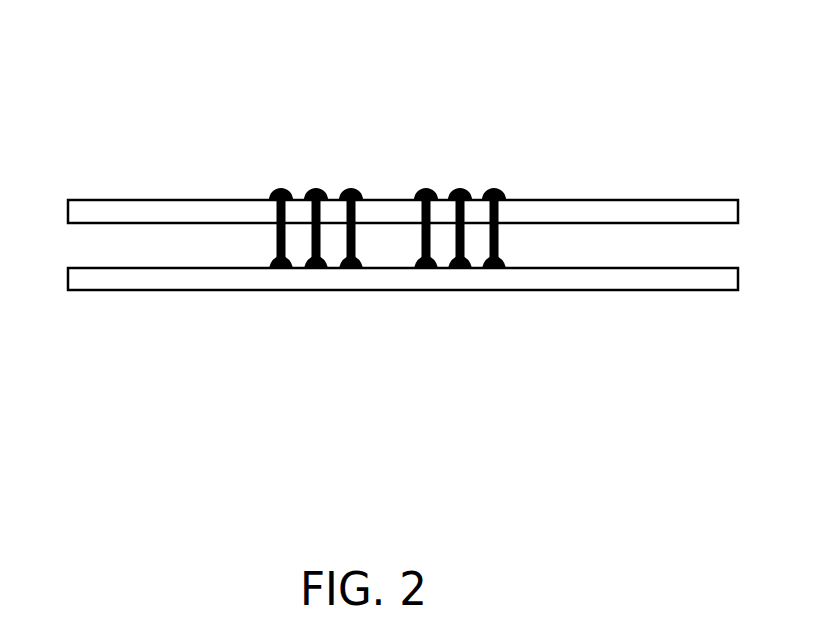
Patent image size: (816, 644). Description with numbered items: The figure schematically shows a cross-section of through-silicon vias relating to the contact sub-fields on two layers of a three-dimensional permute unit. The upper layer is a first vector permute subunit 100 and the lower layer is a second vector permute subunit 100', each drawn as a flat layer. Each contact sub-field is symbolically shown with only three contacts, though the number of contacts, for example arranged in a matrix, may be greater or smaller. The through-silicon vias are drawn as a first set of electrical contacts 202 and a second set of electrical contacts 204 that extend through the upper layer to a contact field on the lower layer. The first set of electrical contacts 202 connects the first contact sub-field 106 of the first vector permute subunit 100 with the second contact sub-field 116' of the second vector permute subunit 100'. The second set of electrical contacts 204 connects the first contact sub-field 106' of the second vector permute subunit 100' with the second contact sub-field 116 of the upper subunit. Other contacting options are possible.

The first vector permute subunit 100 is at (403, 146).
The second vector permute subunit 100' is at (380, 345).
The first set of electrical contacts 202 is at (273, 246).
The second set of electrical contacts 204 is at (510, 243).
The first contact sub-field 106 is at (300, 112).
The second contact sub-field 116 is at (444, 112).
The second contact sub-field 116' is at (300, 339).
The first contact sub-field 106' is at (444, 339).